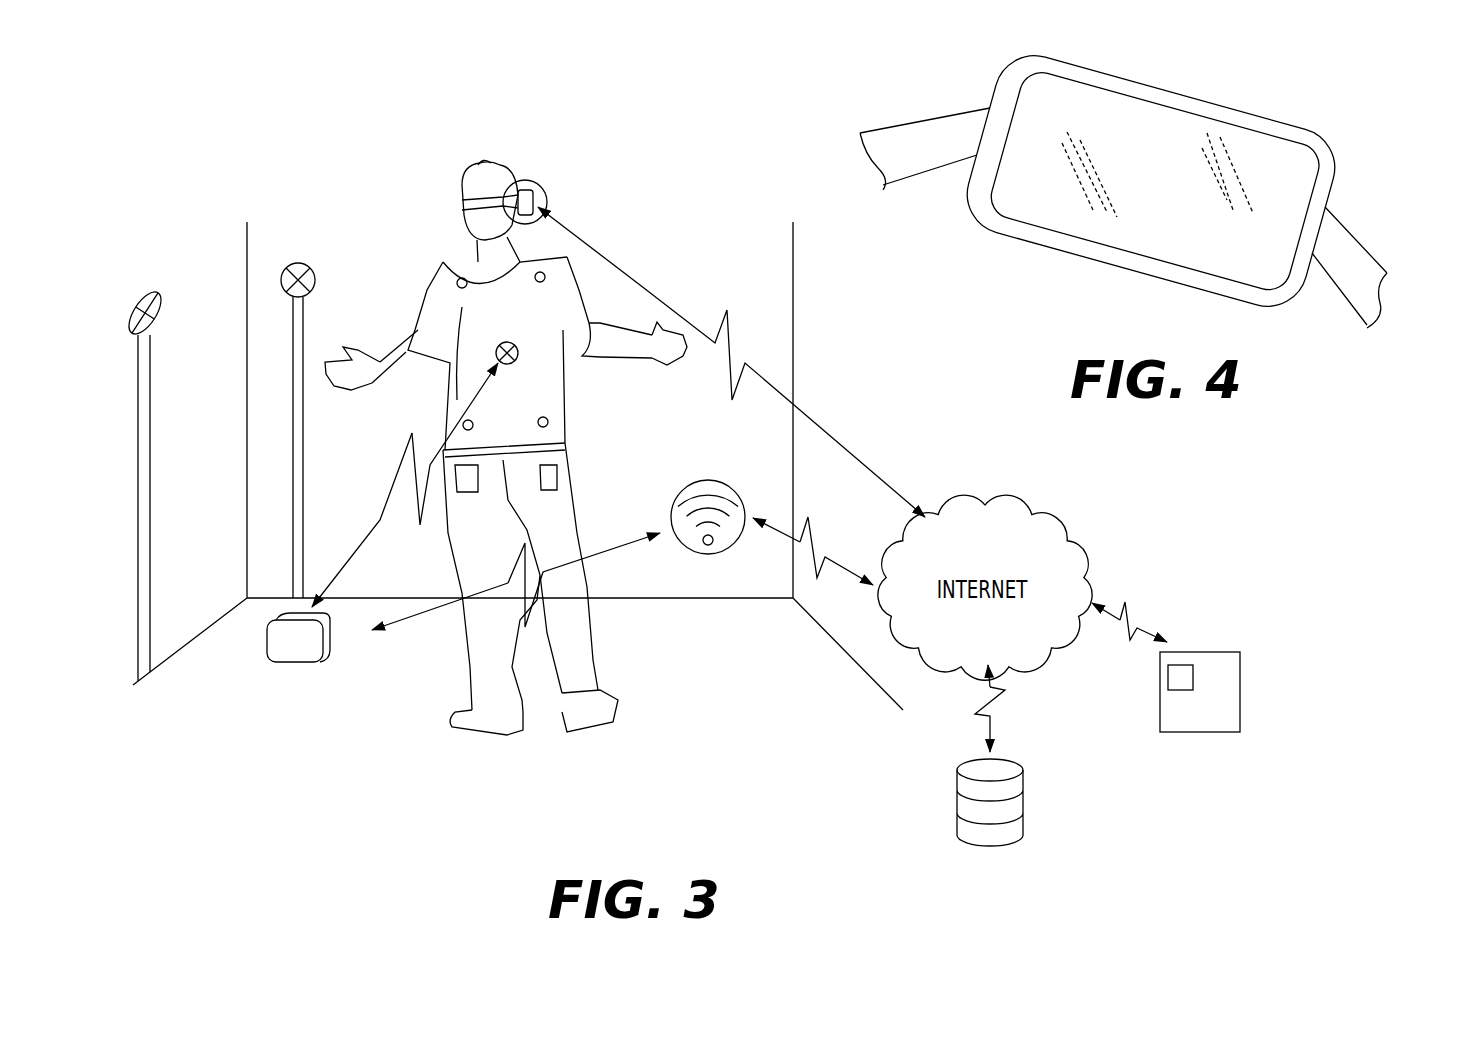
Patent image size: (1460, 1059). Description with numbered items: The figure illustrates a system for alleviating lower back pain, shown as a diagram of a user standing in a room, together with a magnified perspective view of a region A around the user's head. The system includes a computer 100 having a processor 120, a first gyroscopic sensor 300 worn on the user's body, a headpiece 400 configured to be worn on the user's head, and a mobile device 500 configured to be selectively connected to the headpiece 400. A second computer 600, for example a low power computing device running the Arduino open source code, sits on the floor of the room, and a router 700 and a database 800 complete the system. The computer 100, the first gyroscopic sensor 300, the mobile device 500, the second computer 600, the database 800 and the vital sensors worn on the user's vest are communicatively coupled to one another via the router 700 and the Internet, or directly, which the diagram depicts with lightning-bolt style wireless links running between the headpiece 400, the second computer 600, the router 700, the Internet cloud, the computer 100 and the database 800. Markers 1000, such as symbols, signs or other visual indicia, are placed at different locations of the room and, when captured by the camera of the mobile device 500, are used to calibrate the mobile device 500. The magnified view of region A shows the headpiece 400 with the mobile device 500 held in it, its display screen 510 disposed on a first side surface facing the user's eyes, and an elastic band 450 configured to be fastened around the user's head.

In FIG. 3, the markers 1000 is at (147, 291).
In FIG. 3, the first gyroscopic sensor 300 is at (518, 353).
In FIG. 3, the headpiece 400 is at (556, 124).
In FIG. 4, the headpiece 400 is at (1167, 158).
In FIG. 3, the mobile device 500 is at (527, 183).
In FIG. 4, the mobile device 500 is at (1167, 158).
In FIG. 3, the region A is at (545, 184).
In FIG. 3, the second computer 600 is at (293, 663).
In FIG. 3, the router 700 is at (712, 550).
In FIG. 3, the computer 100 is at (1248, 654).
In FIG. 3, the processor 120 is at (1180, 665).
In FIG. 3, the database 800 is at (1023, 803).
In FIG. 4, the display screen 510 is at (1280, 150).
In FIG. 4, the elastic band 450 is at (1357, 250).